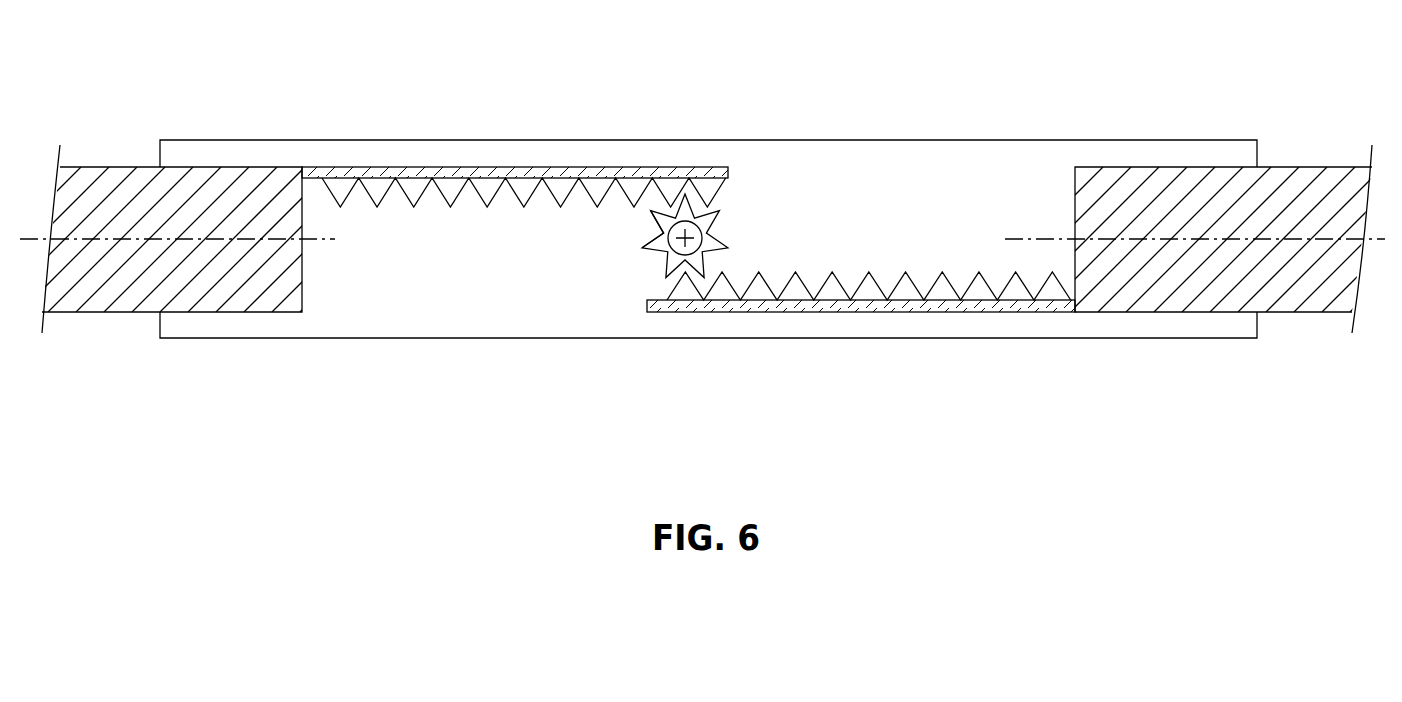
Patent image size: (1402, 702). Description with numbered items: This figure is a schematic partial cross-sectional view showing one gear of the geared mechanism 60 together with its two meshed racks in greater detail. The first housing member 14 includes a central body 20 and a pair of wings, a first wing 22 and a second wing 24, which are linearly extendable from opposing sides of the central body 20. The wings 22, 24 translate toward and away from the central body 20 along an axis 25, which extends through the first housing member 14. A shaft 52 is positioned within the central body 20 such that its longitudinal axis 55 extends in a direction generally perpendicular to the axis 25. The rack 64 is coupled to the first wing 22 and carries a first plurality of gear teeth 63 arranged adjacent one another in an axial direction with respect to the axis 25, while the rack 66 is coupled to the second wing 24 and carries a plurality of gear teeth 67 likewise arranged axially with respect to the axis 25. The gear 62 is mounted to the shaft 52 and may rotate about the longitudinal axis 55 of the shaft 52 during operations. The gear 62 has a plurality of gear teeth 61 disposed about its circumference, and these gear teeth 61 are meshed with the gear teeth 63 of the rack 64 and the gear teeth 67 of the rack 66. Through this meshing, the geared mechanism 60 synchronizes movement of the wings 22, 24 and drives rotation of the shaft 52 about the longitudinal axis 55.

The first housing member 14 is at (356, 130).
The central body 20 is at (513, 339).
The first wing 22 is at (137, 167).
The second wing 24 is at (1296, 167).
The axis 25 is at (126, 243).
The shaft 52 is at (703, 232).
The longitudinal axis 55 is at (673, 253).
The geared mechanism 60 is at (862, 120).
The gear teeth 61 is at (651, 242).
The gear 62 is at (730, 204).
The first plurality of gear teeth 63 is at (385, 196).
The rack 64 is at (547, 167).
The rack 66 is at (773, 313).
The gear teeth 67 is at (838, 284).